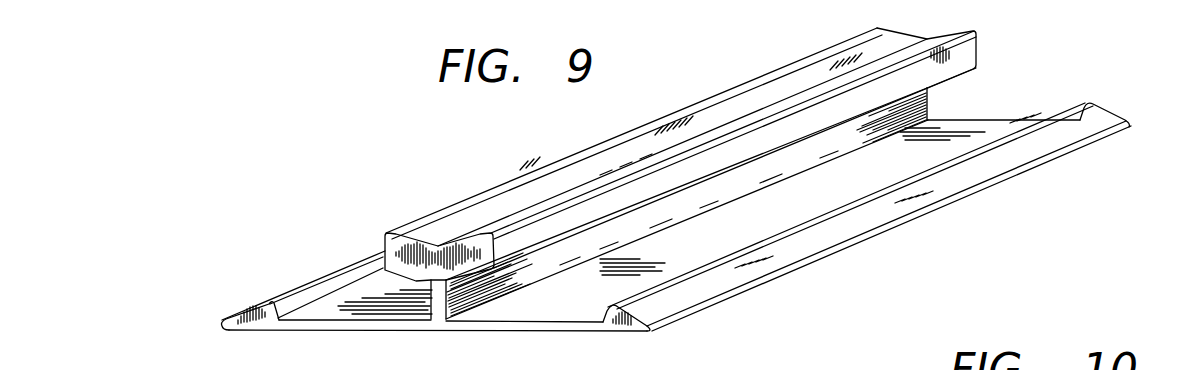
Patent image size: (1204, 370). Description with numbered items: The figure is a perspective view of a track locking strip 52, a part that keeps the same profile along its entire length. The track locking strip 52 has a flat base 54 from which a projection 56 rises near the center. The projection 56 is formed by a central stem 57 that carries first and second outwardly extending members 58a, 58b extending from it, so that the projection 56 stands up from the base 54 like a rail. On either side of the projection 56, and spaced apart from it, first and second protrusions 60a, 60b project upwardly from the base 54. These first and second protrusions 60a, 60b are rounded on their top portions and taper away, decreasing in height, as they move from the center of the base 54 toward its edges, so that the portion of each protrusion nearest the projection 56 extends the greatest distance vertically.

The track locking strip 52 is at (438, 136).
The base 54 is at (553, 364).
The projection 56 is at (920, 34).
The central stem 57 is at (470, 364).
The first outwardly extending member 58a is at (381, 235).
The second outwardly extending member 58b is at (977, 53).
The first protrusion 60a is at (273, 302).
The second protrusion 60b is at (1087, 104).